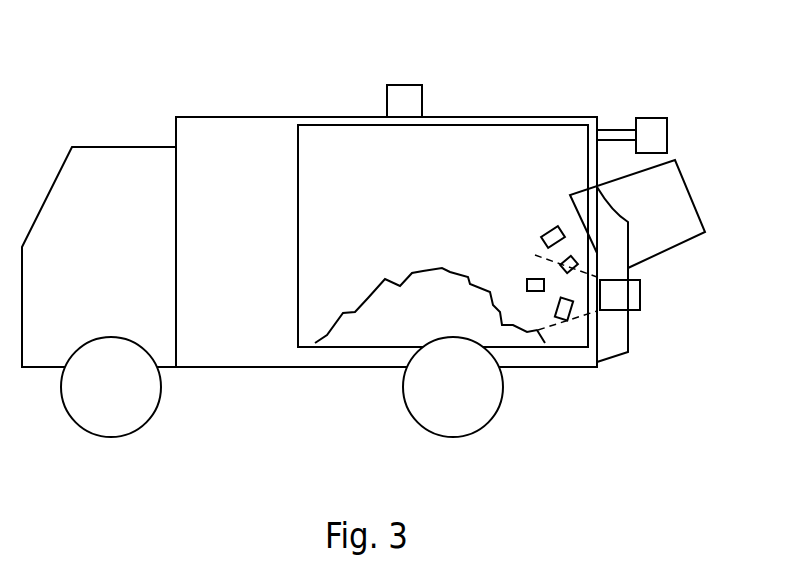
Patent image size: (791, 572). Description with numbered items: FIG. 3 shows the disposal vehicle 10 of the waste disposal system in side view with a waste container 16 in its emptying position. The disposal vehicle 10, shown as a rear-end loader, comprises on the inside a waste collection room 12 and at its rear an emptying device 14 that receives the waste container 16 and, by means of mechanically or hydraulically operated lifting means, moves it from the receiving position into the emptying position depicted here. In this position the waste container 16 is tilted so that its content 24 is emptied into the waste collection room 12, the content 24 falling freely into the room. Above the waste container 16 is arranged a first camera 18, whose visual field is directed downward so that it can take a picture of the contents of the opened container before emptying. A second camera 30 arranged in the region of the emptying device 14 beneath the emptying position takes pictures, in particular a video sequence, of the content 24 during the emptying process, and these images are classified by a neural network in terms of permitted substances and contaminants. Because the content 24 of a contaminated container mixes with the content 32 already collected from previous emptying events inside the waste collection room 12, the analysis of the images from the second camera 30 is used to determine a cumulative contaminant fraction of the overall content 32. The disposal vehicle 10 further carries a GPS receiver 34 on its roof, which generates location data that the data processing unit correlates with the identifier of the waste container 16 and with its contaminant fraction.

The disposal vehicle 10 is at (93, 79).
The waste collection room 12 is at (414, 206).
The emptying device 14 is at (620, 342).
The waste container 16 is at (665, 187).
The first camera 18 is at (653, 123).
The content 24 is at (553, 233).
The second camera 30 is at (622, 293).
The content of the waste collection room 32 is at (445, 317).
The GPS receiver 34 is at (403, 98).